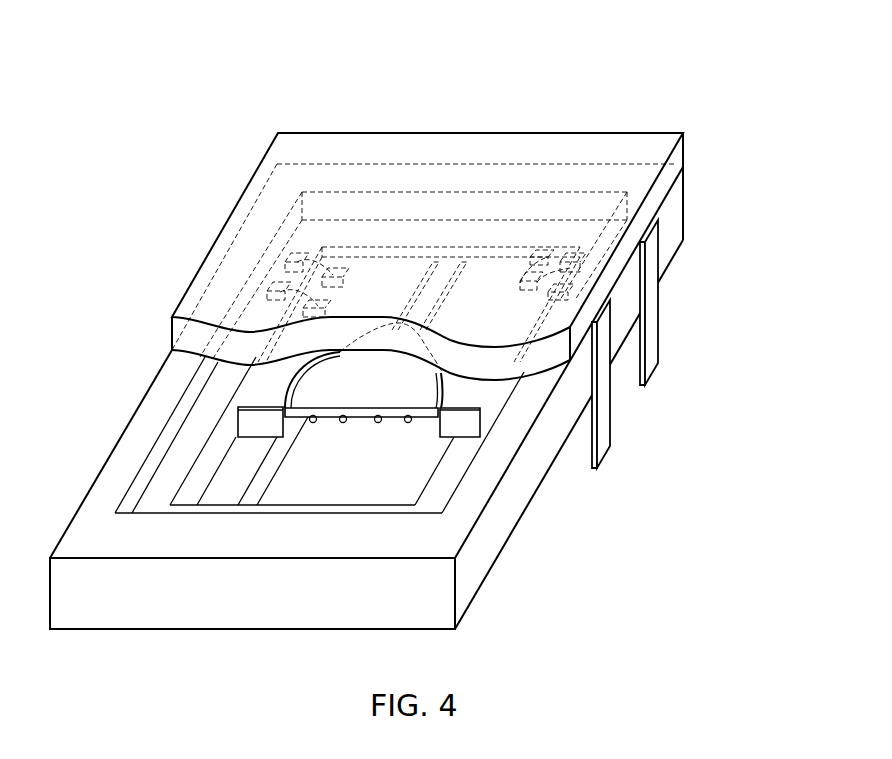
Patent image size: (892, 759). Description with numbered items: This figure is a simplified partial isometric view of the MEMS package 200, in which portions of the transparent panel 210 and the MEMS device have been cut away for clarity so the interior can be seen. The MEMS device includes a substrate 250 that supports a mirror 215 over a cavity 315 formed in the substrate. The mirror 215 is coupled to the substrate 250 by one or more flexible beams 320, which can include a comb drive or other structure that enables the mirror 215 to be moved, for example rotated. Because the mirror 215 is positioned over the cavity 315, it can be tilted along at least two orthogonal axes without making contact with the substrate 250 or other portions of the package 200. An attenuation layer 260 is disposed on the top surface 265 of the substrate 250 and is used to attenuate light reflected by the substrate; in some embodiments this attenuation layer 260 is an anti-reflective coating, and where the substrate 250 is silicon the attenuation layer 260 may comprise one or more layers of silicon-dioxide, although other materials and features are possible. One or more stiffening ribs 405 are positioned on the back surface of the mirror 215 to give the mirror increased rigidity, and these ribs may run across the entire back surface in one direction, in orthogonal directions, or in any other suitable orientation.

The MEMS package 200 is at (368, 346).
The transparent panel 210 is at (626, 133).
The flexible beams 320 is at (438, 280).
The attenuation layer 260 is at (237, 407).
The top surface 265 is at (470, 397).
The stiffening ribs 405 is at (377, 423).
The mirror 215 is at (395, 395).
The cavity 315 is at (330, 497).
The substrate 250 is at (453, 427).